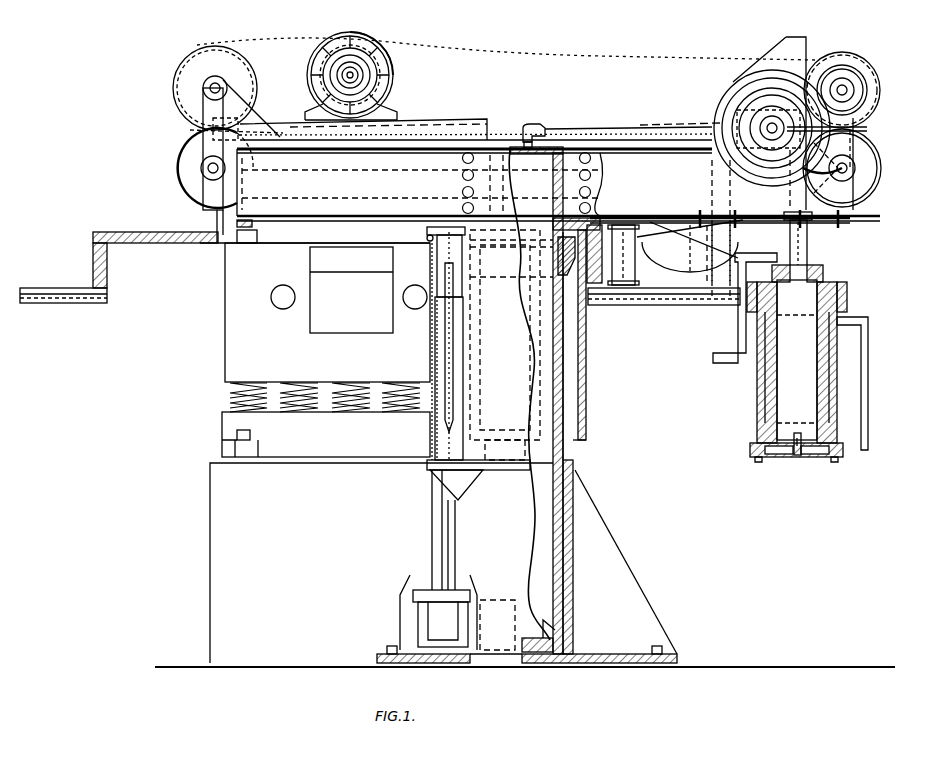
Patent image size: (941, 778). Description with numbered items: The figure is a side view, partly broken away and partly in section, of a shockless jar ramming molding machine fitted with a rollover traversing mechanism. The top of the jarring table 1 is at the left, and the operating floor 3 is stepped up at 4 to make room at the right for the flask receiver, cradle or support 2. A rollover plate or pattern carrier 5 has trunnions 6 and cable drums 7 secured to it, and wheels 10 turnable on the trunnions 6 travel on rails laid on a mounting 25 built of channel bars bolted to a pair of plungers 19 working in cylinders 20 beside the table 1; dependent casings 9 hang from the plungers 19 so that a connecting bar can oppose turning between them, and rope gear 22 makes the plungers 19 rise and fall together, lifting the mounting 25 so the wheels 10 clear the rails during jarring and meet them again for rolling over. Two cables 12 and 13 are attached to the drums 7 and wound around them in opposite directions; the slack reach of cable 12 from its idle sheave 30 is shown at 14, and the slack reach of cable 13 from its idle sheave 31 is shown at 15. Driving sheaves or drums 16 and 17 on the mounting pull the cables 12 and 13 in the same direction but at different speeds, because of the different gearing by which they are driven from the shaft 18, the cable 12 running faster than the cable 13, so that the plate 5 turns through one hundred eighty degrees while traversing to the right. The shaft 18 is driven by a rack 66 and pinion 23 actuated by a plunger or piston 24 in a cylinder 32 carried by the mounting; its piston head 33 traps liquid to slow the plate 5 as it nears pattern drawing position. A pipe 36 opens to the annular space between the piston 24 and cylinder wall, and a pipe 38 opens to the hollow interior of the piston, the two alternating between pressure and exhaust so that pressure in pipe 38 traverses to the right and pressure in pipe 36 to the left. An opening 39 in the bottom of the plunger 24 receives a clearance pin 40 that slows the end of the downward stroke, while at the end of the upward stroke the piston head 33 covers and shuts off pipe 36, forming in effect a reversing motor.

The table top 1 is at (417, 155).
The flask support 2 is at (688, 246).
The operating floor 3 is at (62, 288).
The step 4 is at (165, 232).
The rollover plate 5 is at (470, 119).
The trunnions 6 is at (348, 76).
The cable drums 7 is at (372, 45).
The dependent casings 9 is at (573, 398).
The wheels 10 is at (330, 72).
The cable 12 is at (503, 55).
The cable 13 is at (590, 130).
The slack reach 14 is at (508, 140).
The slack reach 15 is at (674, 218).
The driving sheave 16 is at (868, 62).
The driving sheave 17 is at (865, 200).
The shaft 18 is at (765, 124).
The plungers 19 is at (560, 368).
The cylinders 20 is at (580, 388).
The rope gear 22 is at (440, 522).
The pinion 23 is at (867, 131).
The plunger 24 is at (768, 384).
The mounting 25 is at (652, 140).
The idle sheave 30 is at (172, 88).
The idle sheave 31 is at (172, 168).
The cylinder 32 is at (758, 406).
The piston head 33 is at (758, 432).
The pipe 36 is at (861, 364).
The pipe 38 is at (738, 322).
The opening 39 is at (803, 436).
The clearance pin 40 is at (794, 450).
The rack 66 is at (810, 242).